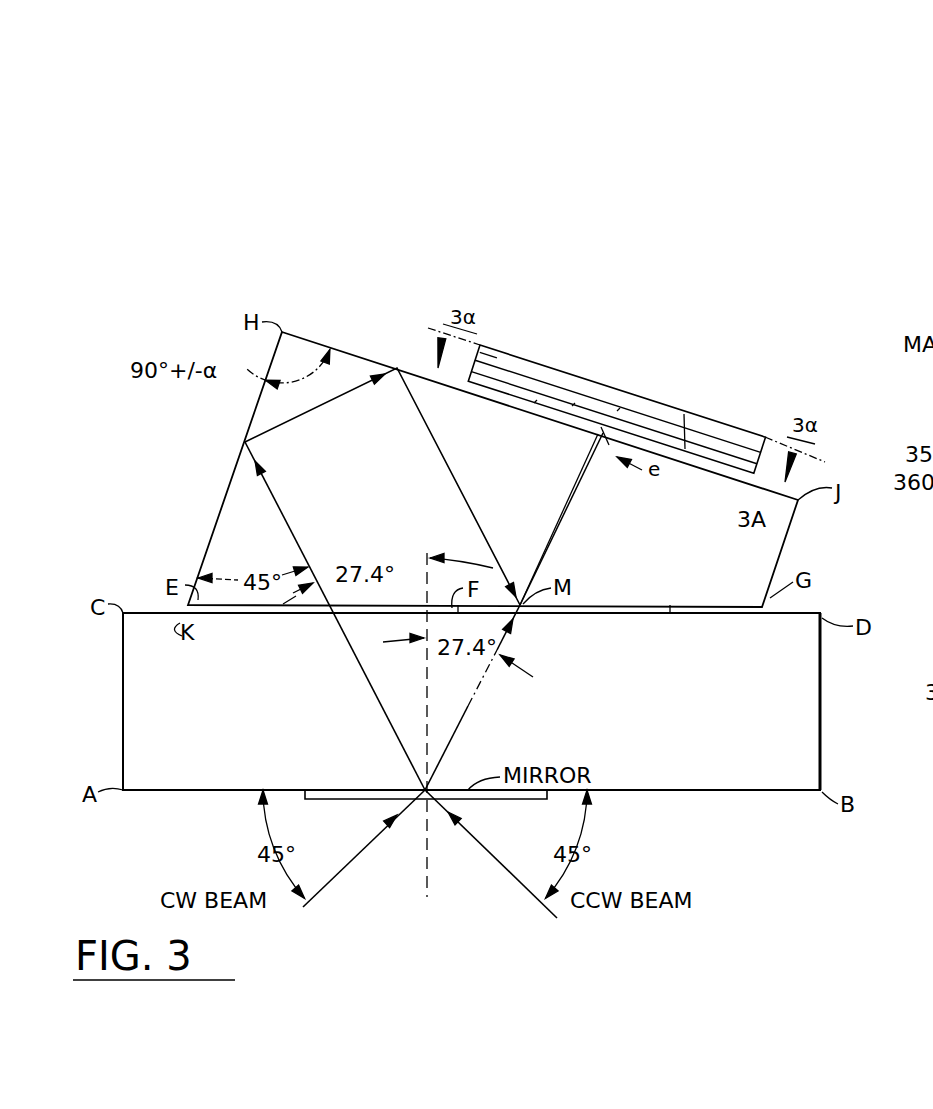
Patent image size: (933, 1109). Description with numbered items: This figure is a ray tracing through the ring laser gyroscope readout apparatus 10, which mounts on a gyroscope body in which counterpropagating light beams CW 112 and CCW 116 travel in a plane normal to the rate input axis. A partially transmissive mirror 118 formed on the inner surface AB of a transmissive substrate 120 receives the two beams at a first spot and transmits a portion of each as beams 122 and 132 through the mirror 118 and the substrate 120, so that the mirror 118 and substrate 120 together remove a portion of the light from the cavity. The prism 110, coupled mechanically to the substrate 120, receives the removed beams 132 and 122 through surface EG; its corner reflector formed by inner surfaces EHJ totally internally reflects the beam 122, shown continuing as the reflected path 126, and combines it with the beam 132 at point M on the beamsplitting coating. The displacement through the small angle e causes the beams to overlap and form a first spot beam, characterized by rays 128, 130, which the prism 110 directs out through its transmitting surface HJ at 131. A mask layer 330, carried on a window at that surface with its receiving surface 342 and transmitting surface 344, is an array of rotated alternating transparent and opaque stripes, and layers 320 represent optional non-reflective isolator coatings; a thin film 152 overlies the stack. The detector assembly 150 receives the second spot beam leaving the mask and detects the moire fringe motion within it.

The ring laser gyroscope readout apparatus 10 is at (773, 295).
The prism 110 is at (660, 548).
The transmissive substrate 120 is at (700, 693).
The CW light beam 112 is at (373, 837).
The CCW light beam 116 is at (507, 872).
The partially transmissive mirror 118 is at (462, 798).
The removed beam ray 122 is at (390, 710).
The internally reflected beam segment 126 is at (446, 463).
The combined beam ray 128 is at (578, 492).
The combined beam ray 130 is at (580, 482).
The exit location on transmitting surface 131 is at (596, 450).
The removed beam ray 132 is at (453, 740).
The detector assembly 150 is at (527, 360).
The detector top layer 152 is at (500, 357).
The non-reflective isolator coatings 320 is at (684, 414).
The mask layer 330 is at (575, 403).
The mask receiving surface 342 is at (537, 400).
The mask transmitting surface 344 is at (620, 408).